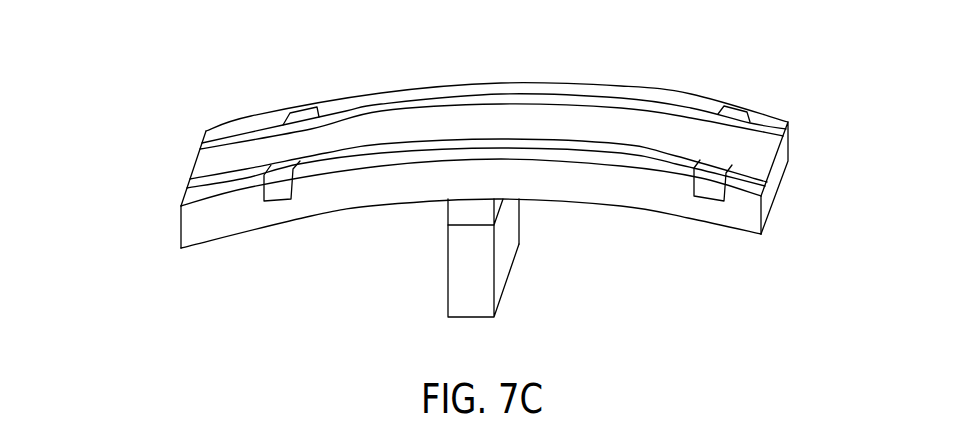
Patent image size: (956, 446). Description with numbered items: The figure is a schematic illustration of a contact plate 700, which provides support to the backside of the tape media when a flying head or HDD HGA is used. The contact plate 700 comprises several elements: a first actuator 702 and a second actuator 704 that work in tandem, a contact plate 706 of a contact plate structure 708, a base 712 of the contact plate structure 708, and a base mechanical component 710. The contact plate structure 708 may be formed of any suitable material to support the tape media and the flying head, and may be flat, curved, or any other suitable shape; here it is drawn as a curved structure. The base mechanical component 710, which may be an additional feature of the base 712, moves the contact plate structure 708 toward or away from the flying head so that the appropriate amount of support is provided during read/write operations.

The contact plate 700 is at (183, 99).
The first actuator 702 is at (304, 108).
The second actuator 704 is at (736, 115).
The contact plate 706 is at (207, 163).
The contact plate structure 708 is at (366, 187).
The base mechanical component 710 is at (456, 208).
The base 712 is at (475, 267).